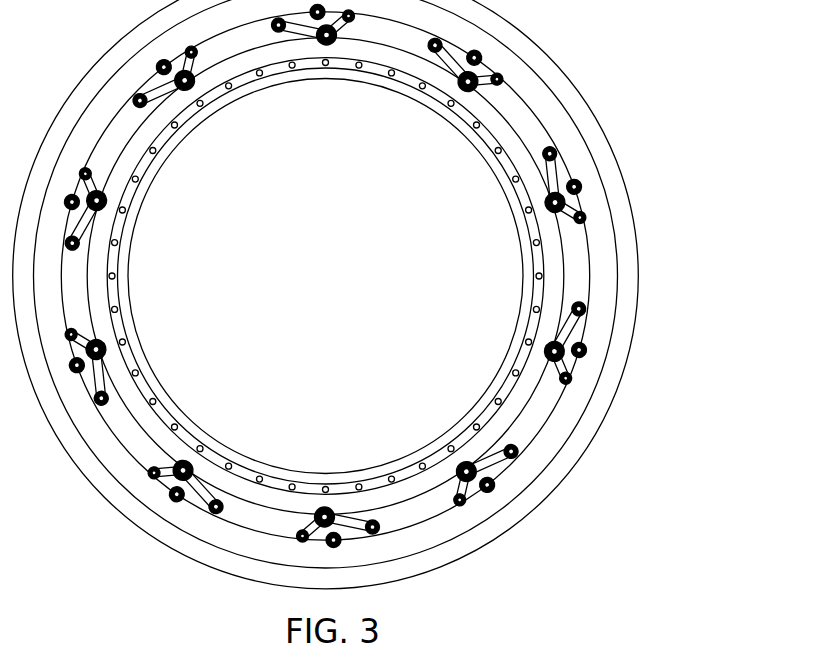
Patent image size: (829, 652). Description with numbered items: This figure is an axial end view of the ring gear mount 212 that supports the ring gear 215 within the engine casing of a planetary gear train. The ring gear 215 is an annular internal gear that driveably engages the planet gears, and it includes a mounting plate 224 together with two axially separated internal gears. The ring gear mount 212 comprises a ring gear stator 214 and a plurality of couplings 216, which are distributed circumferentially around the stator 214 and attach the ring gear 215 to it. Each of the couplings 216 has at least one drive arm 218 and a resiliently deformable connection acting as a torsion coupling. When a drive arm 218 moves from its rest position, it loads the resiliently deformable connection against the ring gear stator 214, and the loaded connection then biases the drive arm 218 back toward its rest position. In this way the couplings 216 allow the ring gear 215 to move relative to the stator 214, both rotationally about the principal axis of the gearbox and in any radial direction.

The ring gear mount 212 is at (645, 148).
The ring gear stator 214 is at (602, 250).
The ring gear 215 is at (505, 382).
The couplings 216 is at (513, 202).
The drive arm 218 is at (88, 212).
The mounting plate 224 is at (127, 392).